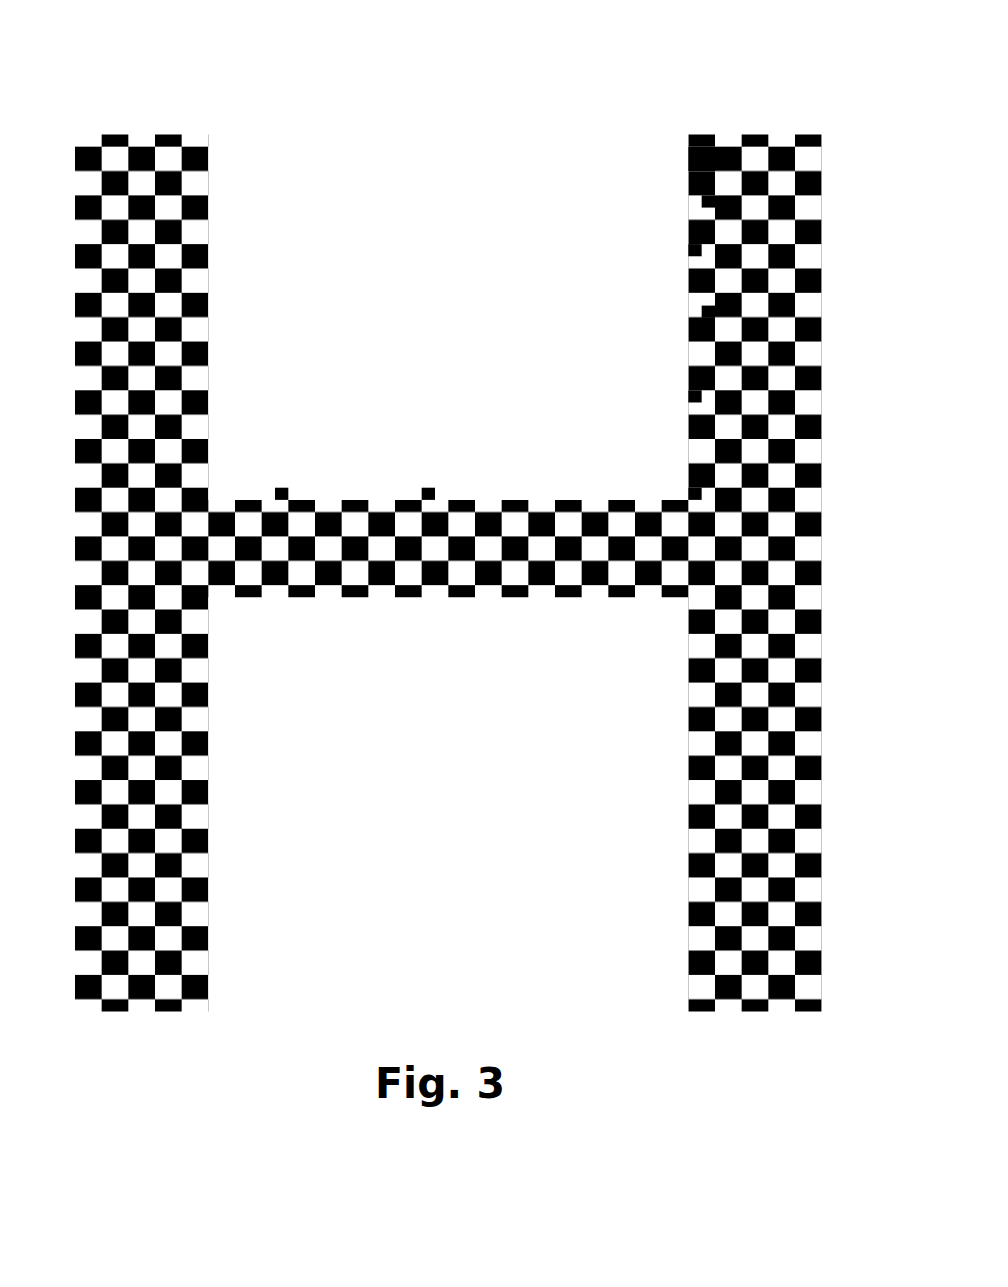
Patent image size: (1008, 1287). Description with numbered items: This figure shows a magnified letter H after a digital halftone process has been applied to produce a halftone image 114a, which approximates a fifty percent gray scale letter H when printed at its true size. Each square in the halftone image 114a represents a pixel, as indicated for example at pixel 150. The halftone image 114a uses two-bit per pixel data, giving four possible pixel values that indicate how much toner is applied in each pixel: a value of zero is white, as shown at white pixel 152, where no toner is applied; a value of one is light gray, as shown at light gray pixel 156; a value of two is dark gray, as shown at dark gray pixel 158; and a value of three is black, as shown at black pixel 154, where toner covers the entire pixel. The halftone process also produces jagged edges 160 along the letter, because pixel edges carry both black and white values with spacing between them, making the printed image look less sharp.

The halftone image 114a is at (578, 113).
The pixel 150 is at (700, 201).
The white pixel 152 is at (699, 312).
The black pixel 154 is at (688, 152).
The light gray pixel 156 is at (694, 396).
The dark gray pixel 158 is at (703, 497).
The jagged edges 160 is at (443, 500).